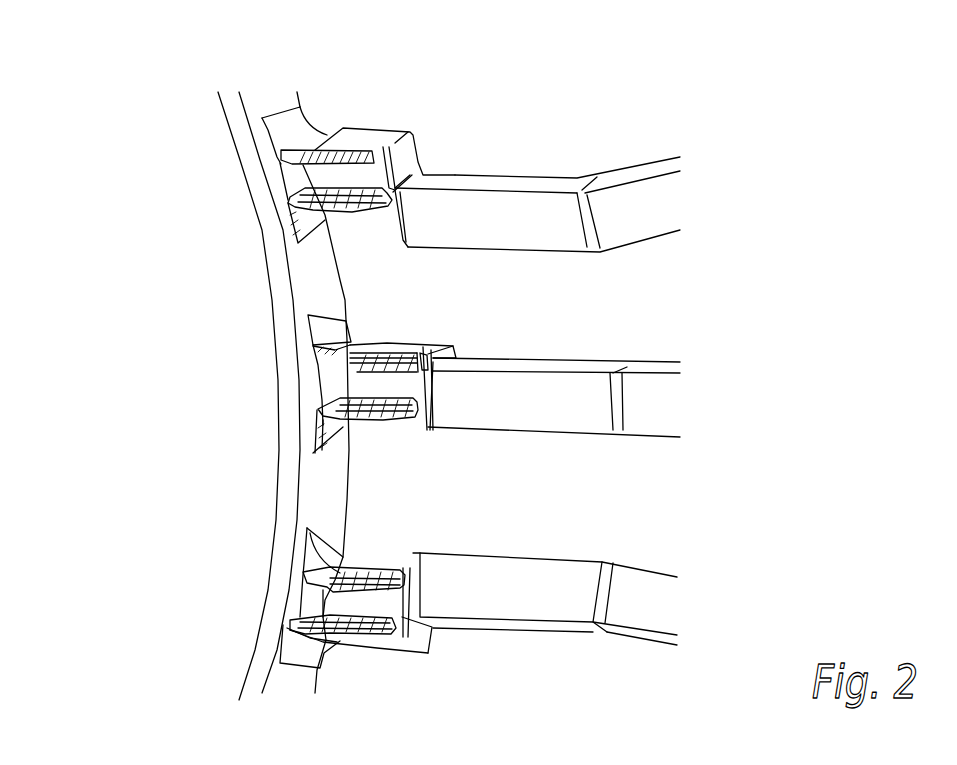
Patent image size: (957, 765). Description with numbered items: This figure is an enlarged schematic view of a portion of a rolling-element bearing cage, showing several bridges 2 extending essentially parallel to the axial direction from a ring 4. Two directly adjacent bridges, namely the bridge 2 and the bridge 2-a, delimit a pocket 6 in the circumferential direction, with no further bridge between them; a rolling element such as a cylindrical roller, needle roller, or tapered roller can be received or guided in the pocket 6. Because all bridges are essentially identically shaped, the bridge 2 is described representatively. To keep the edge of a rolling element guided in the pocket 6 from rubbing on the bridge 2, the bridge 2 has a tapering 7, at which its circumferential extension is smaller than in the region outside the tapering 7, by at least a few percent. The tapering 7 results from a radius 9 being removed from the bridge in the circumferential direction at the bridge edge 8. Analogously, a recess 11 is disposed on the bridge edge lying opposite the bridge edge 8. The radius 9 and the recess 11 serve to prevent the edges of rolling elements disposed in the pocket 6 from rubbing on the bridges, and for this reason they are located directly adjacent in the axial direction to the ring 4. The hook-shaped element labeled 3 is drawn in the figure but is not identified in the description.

The bridge 2 is at (537, 162).
The bridge 2-a is at (653, 410).
The hook portion of clip 3 is at (362, 138).
The ring 4 is at (280, 280).
The pocket 6 is at (743, 234).
The tapering 7 is at (347, 343).
The bridge edge 8 is at (379, 458).
The radius 9 is at (346, 425).
The recess 11 is at (402, 335).